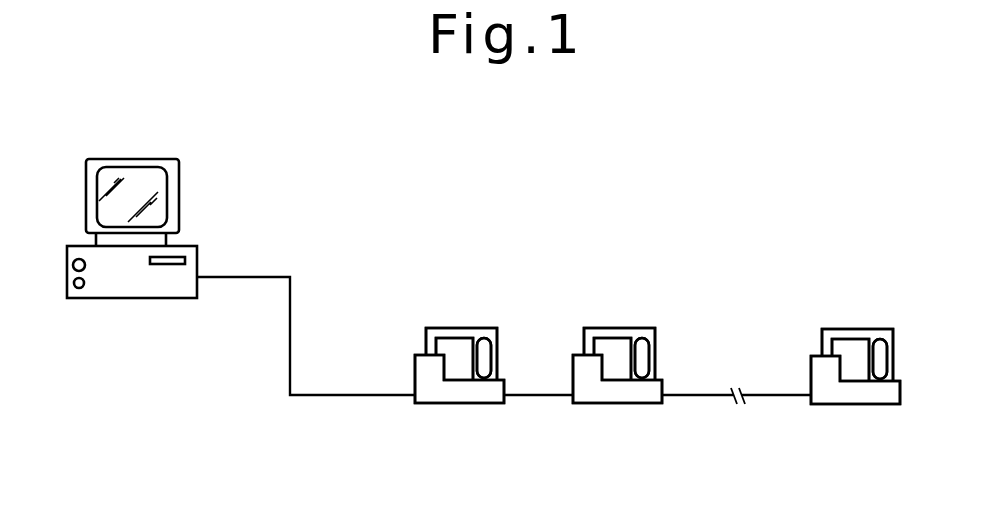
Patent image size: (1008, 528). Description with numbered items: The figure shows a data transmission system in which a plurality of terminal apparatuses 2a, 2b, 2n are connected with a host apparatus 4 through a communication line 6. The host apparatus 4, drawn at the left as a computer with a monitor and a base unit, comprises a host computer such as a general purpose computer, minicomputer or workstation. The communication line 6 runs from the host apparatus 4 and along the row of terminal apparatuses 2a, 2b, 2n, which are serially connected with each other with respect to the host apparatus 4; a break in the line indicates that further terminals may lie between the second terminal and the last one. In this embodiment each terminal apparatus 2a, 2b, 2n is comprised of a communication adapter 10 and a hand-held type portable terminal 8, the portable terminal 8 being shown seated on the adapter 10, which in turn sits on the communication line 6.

The host apparatus 4 is at (113, 158).
The communication line 6 is at (290, 353).
The terminal apparatus 2a is at (499, 319).
The terminal apparatus 2b is at (668, 325).
The terminal apparatus 2n is at (881, 322).
The hand-held type portable terminal 8 is at (440, 328).
The communication adapter 10 is at (433, 395).